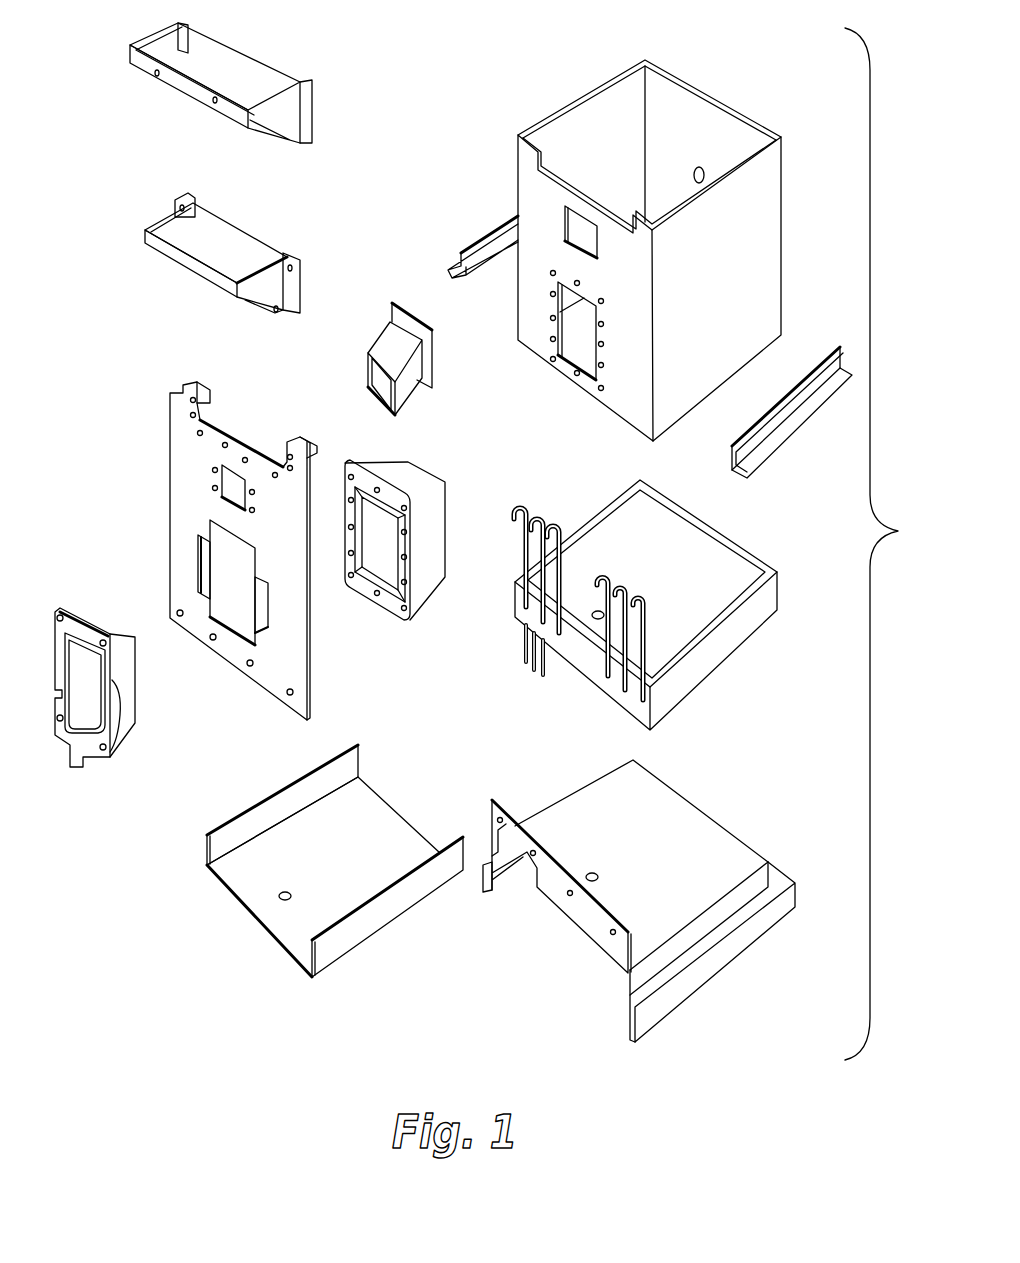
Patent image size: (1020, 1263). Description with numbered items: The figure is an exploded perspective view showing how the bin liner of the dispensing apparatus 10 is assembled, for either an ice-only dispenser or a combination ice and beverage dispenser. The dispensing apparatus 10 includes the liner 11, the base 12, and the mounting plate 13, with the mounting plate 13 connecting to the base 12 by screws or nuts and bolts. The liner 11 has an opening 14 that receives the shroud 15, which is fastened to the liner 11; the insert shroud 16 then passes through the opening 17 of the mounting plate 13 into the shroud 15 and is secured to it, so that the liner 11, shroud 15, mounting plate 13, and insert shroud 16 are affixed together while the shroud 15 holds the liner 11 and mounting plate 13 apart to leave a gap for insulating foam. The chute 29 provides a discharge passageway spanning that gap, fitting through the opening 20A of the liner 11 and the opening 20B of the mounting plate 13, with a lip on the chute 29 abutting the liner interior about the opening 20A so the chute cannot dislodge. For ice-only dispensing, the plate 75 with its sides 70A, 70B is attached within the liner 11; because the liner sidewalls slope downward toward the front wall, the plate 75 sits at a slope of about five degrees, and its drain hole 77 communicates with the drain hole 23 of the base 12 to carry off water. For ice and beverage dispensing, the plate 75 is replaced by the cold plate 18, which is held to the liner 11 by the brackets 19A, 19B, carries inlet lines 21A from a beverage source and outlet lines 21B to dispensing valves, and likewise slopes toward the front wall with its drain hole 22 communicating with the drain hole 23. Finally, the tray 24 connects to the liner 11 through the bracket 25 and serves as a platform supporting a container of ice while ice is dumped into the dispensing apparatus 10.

The dispensing apparatus 10 is at (190, 977).
The liner 11 is at (714, 294).
The base 12 is at (653, 860).
The mounting plate 13 is at (263, 546).
The opening 14 is at (584, 350).
The shroud 15 is at (447, 528).
The insert shroud 16 is at (135, 665).
The opening 17 is at (247, 593).
The cold plate 18 is at (678, 566).
The bracket 19A is at (765, 460).
The bracket 19B is at (494, 231).
The opening 20A is at (592, 238).
The opening 20B is at (240, 482).
The inlet lines 21A is at (524, 678).
The outlet lines 21B is at (552, 508).
The drain hole 22 is at (597, 612).
The drain hole 23 is at (595, 872).
The tray 24 is at (212, 72).
The bracket 25 is at (215, 258).
The chute 29 is at (408, 395).
The side 70A is at (452, 847).
The side 70B is at (355, 760).
The plate 75 is at (328, 860).
The drain hole 77 is at (285, 890).